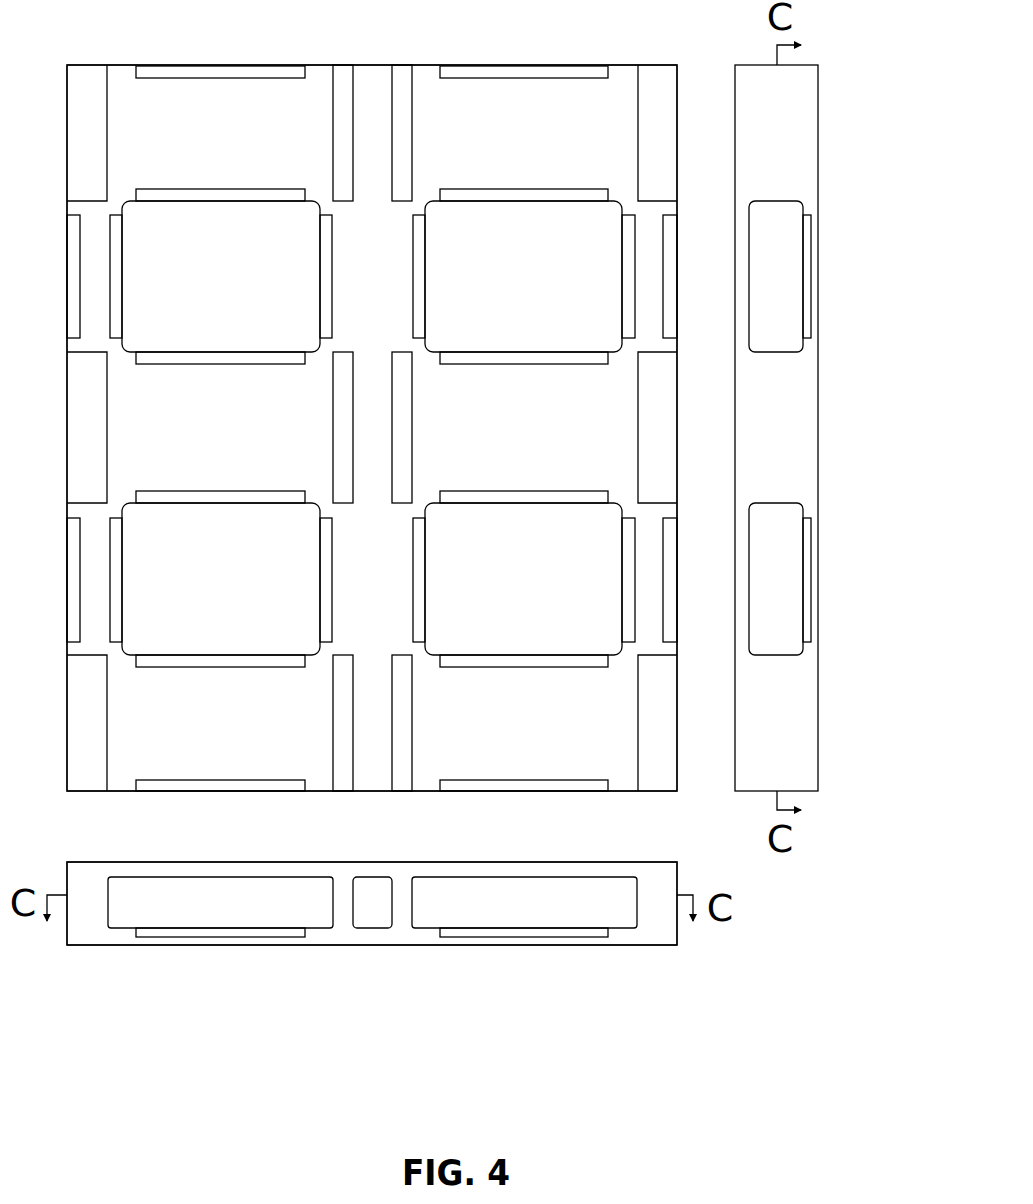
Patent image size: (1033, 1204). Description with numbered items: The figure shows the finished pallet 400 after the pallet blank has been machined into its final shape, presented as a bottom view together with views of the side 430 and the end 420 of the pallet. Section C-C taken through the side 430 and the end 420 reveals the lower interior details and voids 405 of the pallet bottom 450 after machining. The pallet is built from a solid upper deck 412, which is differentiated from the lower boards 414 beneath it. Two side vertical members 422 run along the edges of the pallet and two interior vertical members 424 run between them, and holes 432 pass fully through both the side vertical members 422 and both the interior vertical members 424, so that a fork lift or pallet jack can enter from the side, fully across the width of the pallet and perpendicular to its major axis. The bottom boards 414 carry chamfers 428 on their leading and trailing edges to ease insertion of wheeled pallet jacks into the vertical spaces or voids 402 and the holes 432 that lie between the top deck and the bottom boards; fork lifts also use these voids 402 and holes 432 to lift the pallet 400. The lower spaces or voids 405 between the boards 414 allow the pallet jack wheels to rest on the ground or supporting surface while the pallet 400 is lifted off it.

The pallet 400 is at (455, 508).
The voids 402 is at (372, 902).
The voids 405 is at (372, 428).
The upper deck 412 is at (528, 862).
The lower boards 414 is at (335, 528).
The end 420 is at (372, 933).
The side vertical members 422 is at (662, 407).
The interior vertical members 424 is at (400, 427).
The chamfers 428 is at (282, 665).
The side 430 is at (815, 424).
The holes 432 is at (783, 293).
The pallet bottom 450 is at (372, 400).